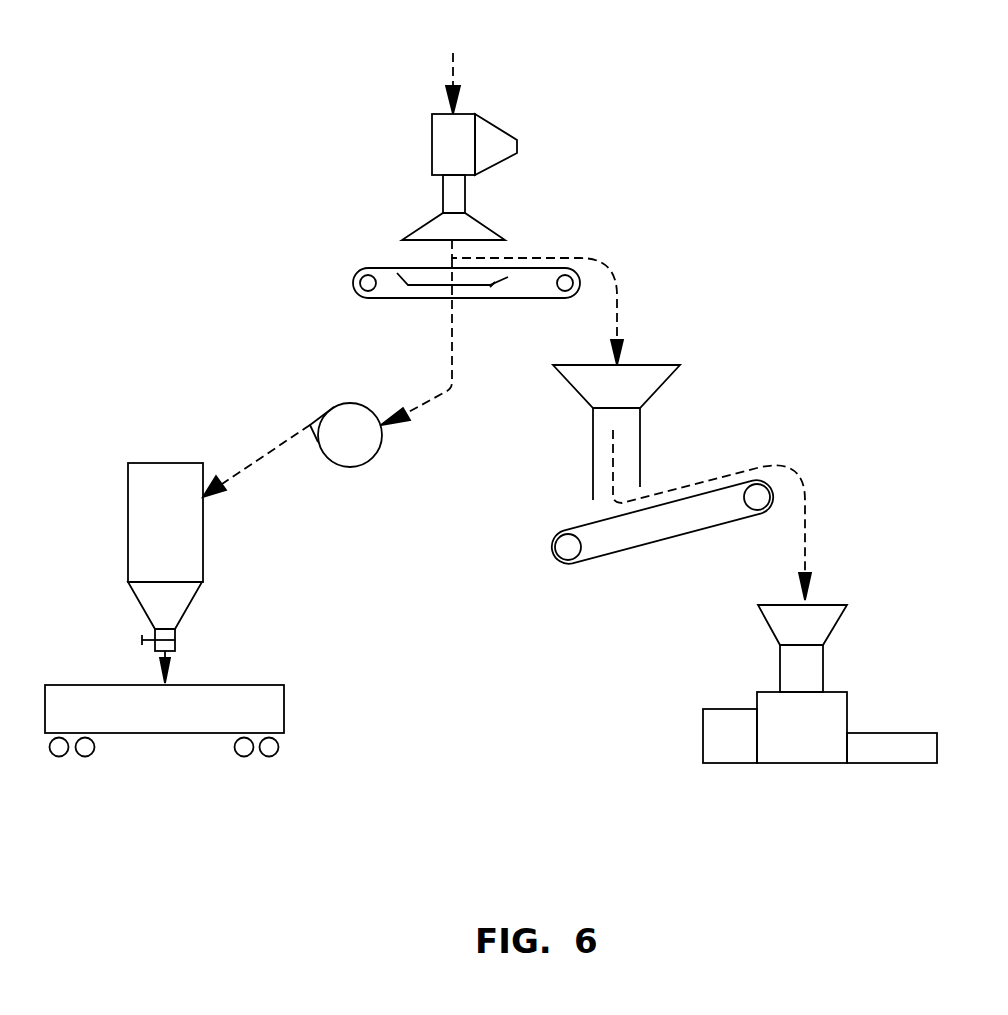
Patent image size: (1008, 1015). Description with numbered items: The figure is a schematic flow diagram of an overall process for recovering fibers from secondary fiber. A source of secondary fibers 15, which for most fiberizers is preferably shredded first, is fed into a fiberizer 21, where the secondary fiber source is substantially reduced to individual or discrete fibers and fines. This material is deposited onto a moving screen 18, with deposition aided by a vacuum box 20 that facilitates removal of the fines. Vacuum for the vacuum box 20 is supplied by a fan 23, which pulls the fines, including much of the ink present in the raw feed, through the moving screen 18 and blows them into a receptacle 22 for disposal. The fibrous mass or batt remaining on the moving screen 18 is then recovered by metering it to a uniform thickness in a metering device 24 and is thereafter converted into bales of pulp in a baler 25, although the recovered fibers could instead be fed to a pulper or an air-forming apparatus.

The source of secondary fibers 15 is at (452, 72).
The moving screen 18 is at (388, 268).
The vacuum box 20 is at (413, 298).
The fiberizer 21 is at (464, 155).
The receptacle 22 is at (177, 540).
The fan 23 is at (362, 446).
The metering device 24 is at (716, 522).
The baler 25 is at (815, 740).